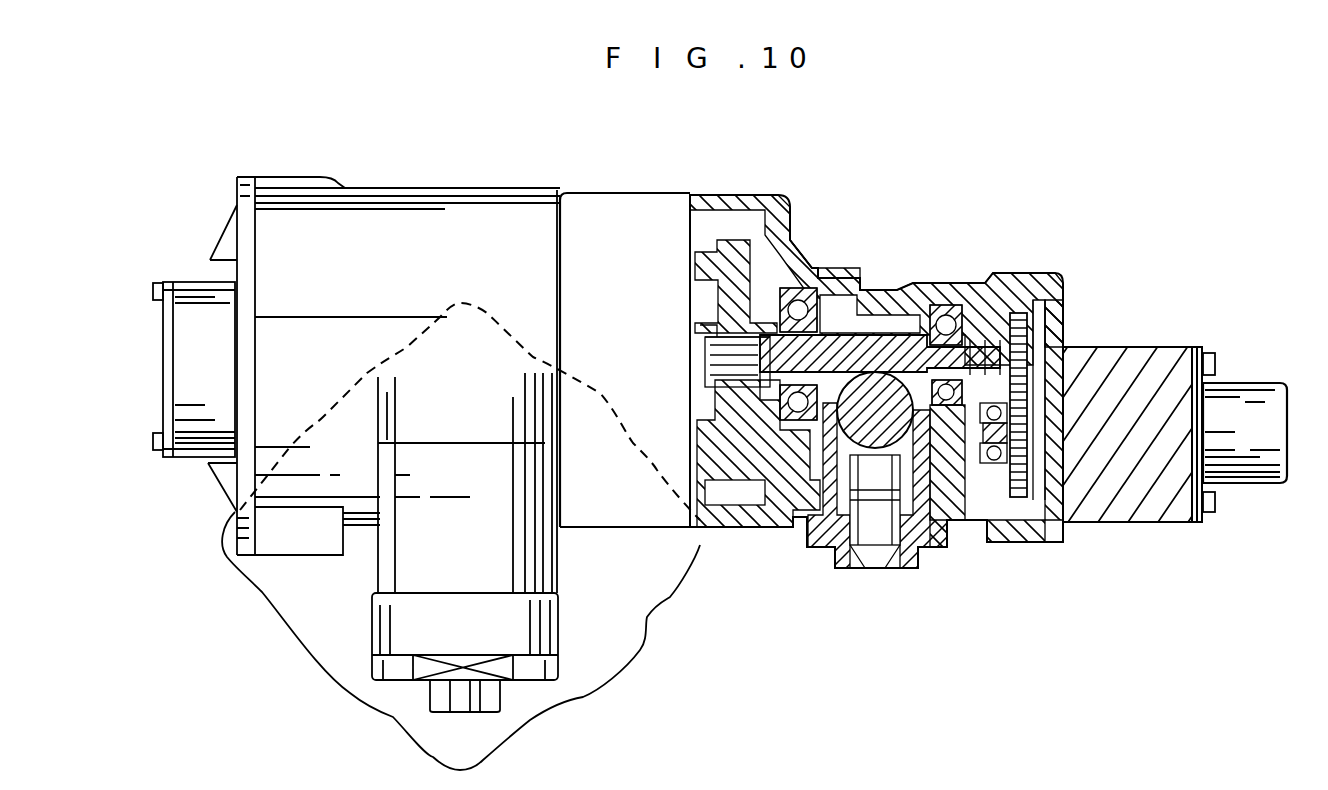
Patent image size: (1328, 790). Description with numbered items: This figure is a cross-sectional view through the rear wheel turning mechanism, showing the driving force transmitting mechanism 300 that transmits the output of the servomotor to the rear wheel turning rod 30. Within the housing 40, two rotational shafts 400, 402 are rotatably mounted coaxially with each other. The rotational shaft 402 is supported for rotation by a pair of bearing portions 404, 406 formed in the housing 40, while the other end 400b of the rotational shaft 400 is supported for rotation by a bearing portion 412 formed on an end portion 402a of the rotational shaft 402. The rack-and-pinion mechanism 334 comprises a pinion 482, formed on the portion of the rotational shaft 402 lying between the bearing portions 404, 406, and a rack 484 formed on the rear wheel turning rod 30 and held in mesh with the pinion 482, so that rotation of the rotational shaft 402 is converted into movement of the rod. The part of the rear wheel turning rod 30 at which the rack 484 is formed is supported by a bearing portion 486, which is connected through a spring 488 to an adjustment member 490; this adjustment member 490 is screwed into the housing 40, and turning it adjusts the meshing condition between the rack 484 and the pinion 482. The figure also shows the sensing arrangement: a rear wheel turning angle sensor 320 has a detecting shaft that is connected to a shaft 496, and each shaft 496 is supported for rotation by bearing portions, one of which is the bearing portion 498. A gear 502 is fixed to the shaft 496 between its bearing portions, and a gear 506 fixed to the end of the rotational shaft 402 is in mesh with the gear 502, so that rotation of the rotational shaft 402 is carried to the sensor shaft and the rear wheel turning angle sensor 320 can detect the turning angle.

The driving force transmitting mechanism 300 is at (633, 224).
The housing 40 is at (729, 195).
The end portion of the rotational shaft 402a is at (800, 220).
The bearing portion 404 is at (810, 295).
The rack-and-pinion mechanism 334 is at (907, 333).
The pinion 482 is at (937, 305).
The bearing portion 406 is at (1003, 283).
The gear 506 is at (1013, 303).
The rear wheel turning angle sensor 320 is at (1240, 400).
The bearing portion 412 is at (707, 270).
The rotational shaft 400 is at (710, 323).
The other end of the rotational shaft 400b is at (707, 337).
The rotational shaft 402 is at (692, 387).
The rack 484 is at (753, 397).
The bearing portion 486 is at (800, 507).
The spring 488 is at (860, 550).
The adjustment member 490 is at (897, 560).
The rear wheel turning rod 30 is at (922, 542).
The bearing portion 498 is at (988, 542).
The gear 502 is at (1053, 542).
The shaft 496 is at (1040, 433).